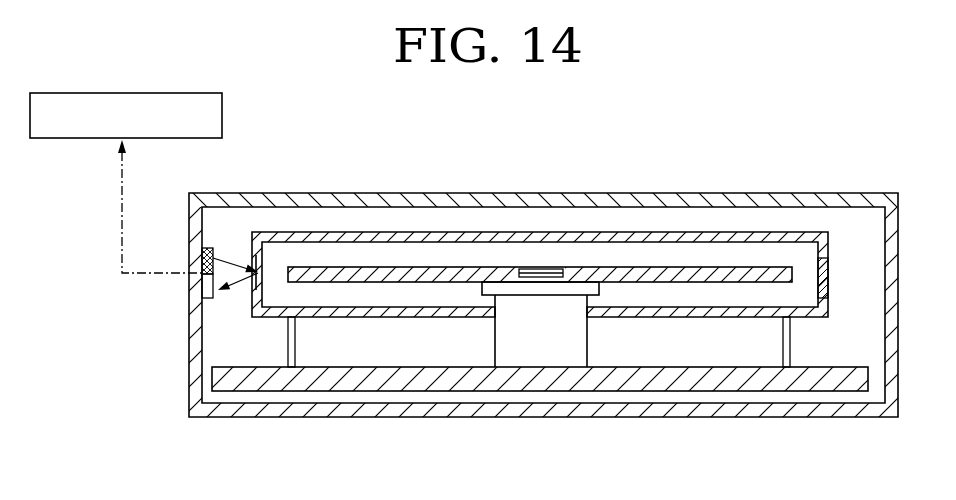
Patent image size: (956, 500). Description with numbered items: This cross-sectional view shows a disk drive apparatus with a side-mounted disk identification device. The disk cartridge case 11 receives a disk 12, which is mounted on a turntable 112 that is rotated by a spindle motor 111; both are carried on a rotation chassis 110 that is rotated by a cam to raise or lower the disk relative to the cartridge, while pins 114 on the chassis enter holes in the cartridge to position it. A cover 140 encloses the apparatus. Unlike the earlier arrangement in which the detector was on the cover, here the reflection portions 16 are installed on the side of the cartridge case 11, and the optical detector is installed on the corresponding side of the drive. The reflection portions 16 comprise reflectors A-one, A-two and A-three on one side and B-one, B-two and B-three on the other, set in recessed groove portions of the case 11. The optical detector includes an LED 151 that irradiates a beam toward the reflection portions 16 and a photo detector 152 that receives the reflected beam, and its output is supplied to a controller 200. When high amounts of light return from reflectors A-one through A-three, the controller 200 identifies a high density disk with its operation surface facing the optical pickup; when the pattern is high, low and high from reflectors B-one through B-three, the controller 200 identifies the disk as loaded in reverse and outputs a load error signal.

The controller 200 is at (140, 93).
The cover 140 is at (553, 200).
The case 11 is at (703, 238).
The disk 12 is at (750, 272).
The turntable 112 is at (490, 288).
The spindle motor 111 is at (546, 353).
The rotation chassis 110 is at (680, 380).
The pins 114 is at (295, 341).
The reflection portions 16 is at (258, 272).
The LED 151 is at (202, 252).
The photo detector 152 is at (207, 291).